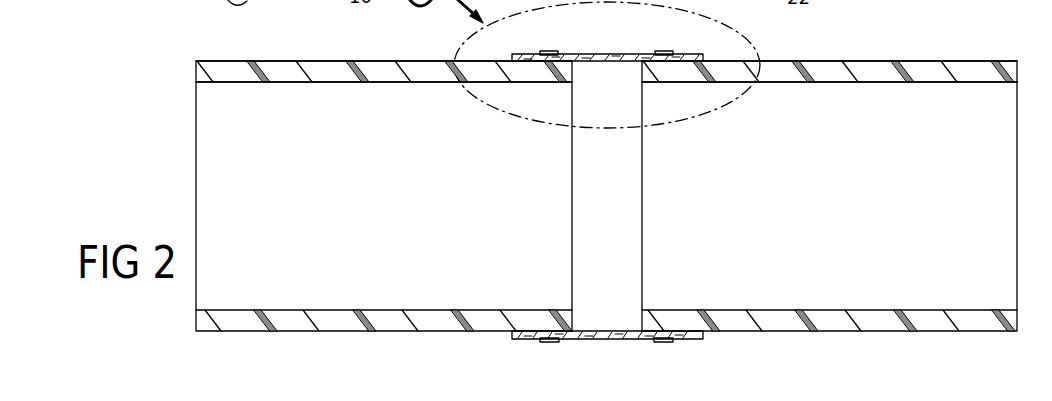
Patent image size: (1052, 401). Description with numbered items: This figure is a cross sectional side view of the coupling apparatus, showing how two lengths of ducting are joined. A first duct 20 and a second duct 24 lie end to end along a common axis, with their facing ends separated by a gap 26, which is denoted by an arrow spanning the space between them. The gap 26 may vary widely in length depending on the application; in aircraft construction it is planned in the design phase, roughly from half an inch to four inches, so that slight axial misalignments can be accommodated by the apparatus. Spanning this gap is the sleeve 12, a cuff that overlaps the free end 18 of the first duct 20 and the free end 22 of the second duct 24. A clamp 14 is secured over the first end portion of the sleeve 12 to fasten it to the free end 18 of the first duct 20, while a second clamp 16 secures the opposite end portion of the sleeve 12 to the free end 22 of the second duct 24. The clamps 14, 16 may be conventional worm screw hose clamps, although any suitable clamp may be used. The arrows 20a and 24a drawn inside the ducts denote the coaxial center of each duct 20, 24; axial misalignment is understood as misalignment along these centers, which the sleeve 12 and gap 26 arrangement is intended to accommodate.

The sleeve 12 is at (605, 40).
The clamp 14 is at (548, 52).
The clamp 16 is at (666, 52).
The free end 18 is at (387, 68).
The first duct 20 is at (287, 50).
The coaxial center of first duct 20a is at (513, 196).
The free end 22 is at (810, 68).
The second duct 24 is at (905, 50).
The coaxial center of second duct 24a is at (960, 196).
The gap 26 is at (642, 196).